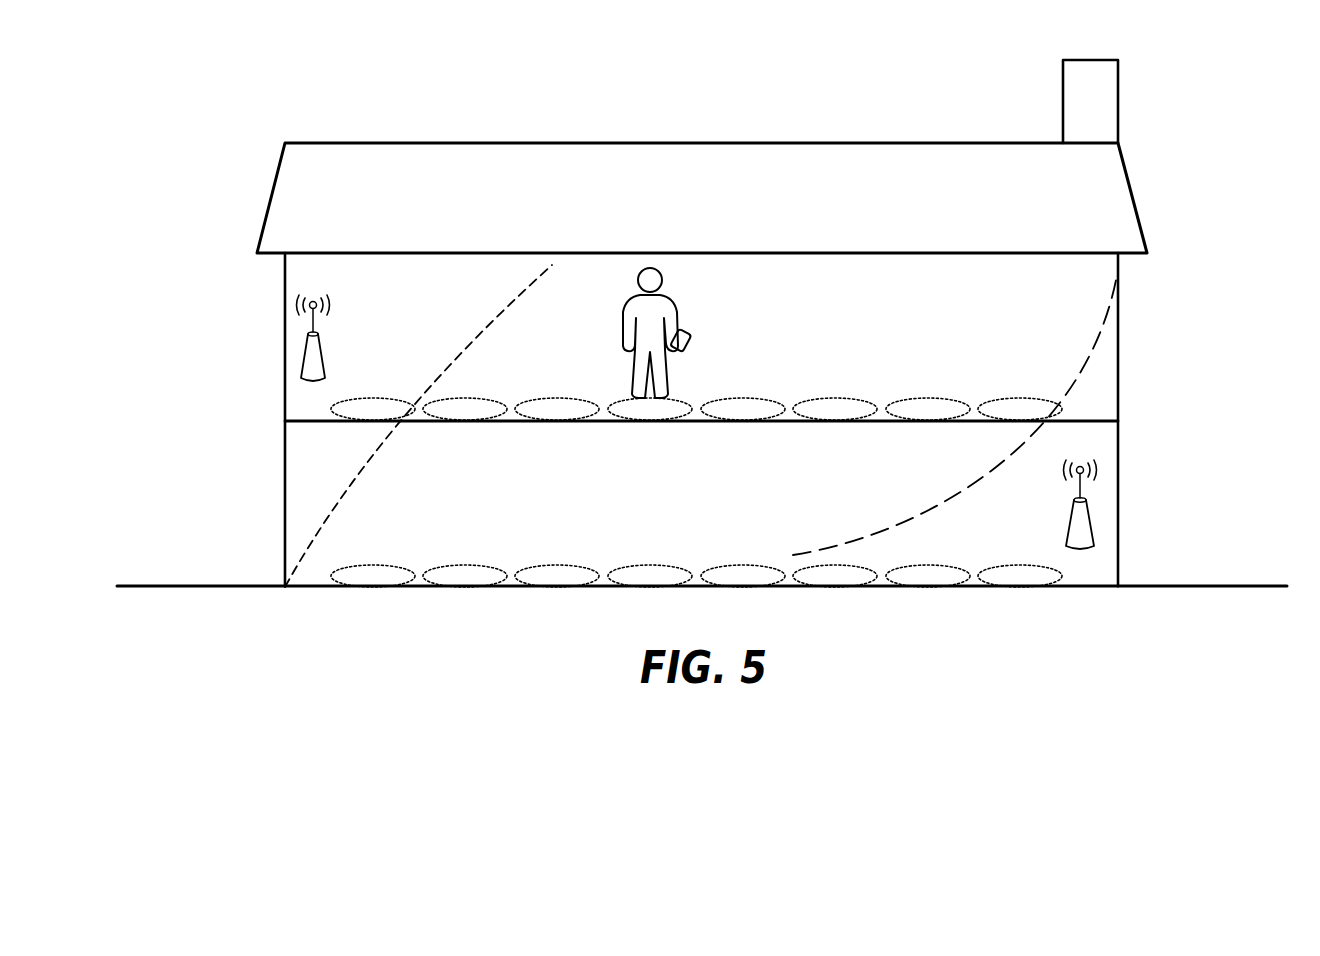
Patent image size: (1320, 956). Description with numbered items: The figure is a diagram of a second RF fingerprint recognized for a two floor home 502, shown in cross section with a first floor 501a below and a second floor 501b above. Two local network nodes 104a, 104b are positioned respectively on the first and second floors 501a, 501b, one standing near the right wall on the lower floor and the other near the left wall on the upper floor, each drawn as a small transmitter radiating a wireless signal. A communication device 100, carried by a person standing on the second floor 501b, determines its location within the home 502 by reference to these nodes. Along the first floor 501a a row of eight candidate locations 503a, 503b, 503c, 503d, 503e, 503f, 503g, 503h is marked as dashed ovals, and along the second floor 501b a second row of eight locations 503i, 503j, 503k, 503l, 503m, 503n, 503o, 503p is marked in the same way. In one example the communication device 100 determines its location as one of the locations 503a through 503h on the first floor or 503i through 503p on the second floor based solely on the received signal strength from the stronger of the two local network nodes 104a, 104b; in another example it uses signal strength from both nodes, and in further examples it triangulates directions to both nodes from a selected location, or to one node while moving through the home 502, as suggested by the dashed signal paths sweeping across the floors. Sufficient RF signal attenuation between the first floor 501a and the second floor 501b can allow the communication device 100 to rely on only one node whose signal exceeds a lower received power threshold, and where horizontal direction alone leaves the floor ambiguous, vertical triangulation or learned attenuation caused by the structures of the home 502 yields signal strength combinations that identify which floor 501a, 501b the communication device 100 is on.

The home 502 is at (295, 142).
The first floor 501a is at (265, 448).
The second floor 501b is at (1140, 292).
The local network node 104a is at (1093, 528).
The local network node 104b is at (298, 358).
The communication device 100 is at (690, 350).
The location 503a is at (1020, 576).
The location 503b is at (928, 576).
The location 503c is at (835, 576).
The location 503d is at (743, 576).
The location 503e is at (650, 576).
The location 503f is at (557, 576).
The location 503g is at (465, 576).
The location 503h is at (373, 576).
The location 503i is at (373, 409).
The location 503j is at (465, 409).
The location 503k is at (557, 409).
The location 503l is at (650, 409).
The location 503m is at (743, 409).
The location 503n is at (835, 409).
The location 503o is at (928, 409).
The location 503p is at (1020, 409).